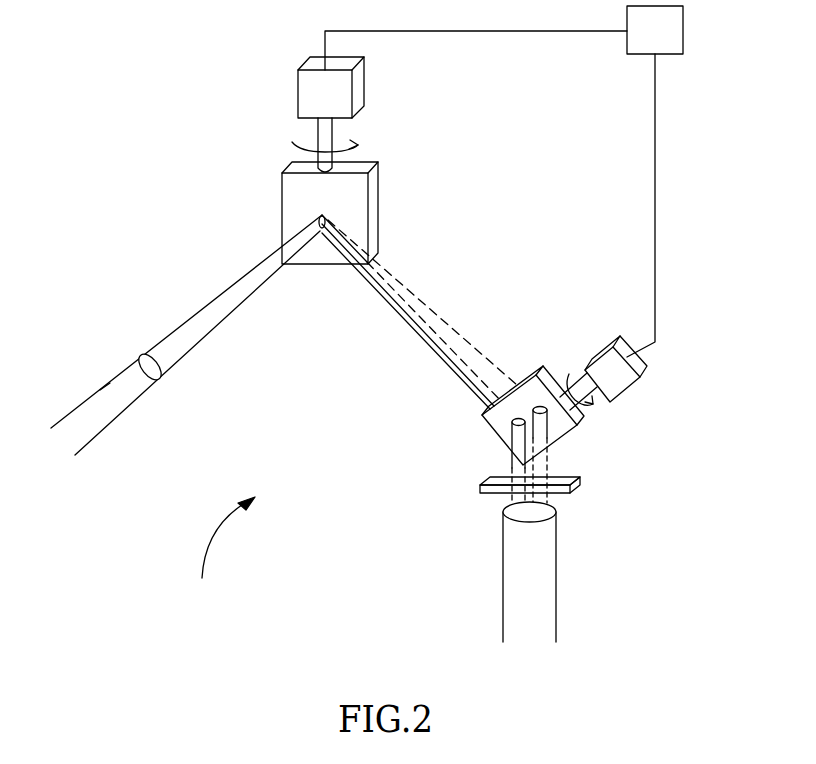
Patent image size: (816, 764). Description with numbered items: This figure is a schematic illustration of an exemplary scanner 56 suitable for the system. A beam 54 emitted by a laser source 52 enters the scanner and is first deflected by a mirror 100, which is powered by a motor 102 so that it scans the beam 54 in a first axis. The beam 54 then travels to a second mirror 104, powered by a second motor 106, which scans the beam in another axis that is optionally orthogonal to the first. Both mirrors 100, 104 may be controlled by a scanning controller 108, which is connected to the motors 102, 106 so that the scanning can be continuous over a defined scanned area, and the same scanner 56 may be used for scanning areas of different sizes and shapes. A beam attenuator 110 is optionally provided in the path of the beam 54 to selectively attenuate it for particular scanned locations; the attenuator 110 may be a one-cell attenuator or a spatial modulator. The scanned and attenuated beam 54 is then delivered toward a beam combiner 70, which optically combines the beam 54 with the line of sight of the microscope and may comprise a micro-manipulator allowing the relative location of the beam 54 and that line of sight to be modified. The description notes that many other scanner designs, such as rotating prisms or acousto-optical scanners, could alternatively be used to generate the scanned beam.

The laser source 52 is at (117, 388).
The beam 54 is at (235, 305).
The scanner 56 is at (218, 557).
The beam combiner 70 is at (542, 578).
The mirror 100 is at (380, 205).
The motor 102 is at (356, 80).
The second mirror 104 is at (536, 368).
The second motor 106 is at (599, 352).
The scanning controller 108 is at (683, 28).
The beam attenuator 110 is at (577, 473).